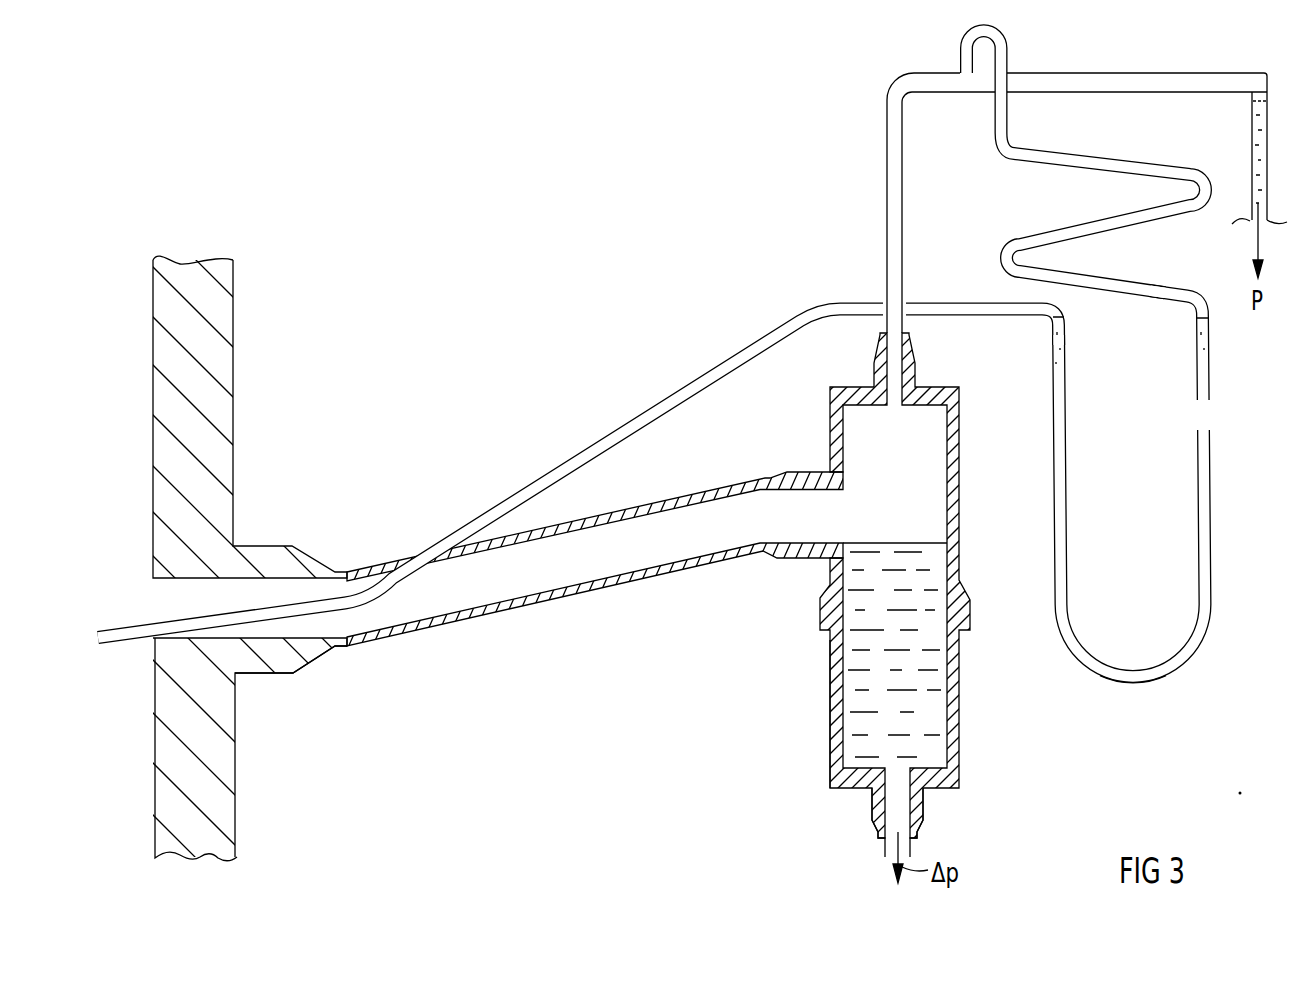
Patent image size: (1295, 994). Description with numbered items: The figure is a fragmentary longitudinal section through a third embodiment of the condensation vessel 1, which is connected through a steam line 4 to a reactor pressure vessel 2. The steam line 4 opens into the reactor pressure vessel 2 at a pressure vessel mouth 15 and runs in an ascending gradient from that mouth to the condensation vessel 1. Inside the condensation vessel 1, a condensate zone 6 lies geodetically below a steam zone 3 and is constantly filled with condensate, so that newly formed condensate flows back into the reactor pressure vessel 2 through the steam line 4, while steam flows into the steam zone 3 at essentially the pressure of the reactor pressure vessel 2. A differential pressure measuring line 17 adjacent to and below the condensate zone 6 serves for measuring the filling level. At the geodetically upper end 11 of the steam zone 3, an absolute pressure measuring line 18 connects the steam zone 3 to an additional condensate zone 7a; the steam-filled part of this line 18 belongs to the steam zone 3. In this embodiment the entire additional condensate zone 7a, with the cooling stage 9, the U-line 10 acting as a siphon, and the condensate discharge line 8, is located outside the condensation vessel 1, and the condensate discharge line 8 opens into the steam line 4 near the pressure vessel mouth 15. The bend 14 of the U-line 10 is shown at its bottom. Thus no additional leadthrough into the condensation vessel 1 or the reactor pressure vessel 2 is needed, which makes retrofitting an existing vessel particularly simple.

The condensation vessel 1 is at (828, 753).
The reactor pressure vessel 2 is at (214, 782).
The steam zone 3 is at (875, 460).
The steam line 4 is at (613, 548).
The condensate zone 6 is at (858, 675).
The additional condensate zone 7a is at (1207, 381).
The condensate discharge line 8 is at (707, 375).
The cooling stage 9 is at (1108, 155).
The U-line 10 is at (1082, 659).
The upper end 11 is at (892, 417).
The U-tube bend 14 is at (1125, 683).
The pressure vessel mouth 15 is at (310, 627).
The differential pressure measuring line 17 is at (888, 845).
The absolute pressure measuring line 18 is at (1178, 73).